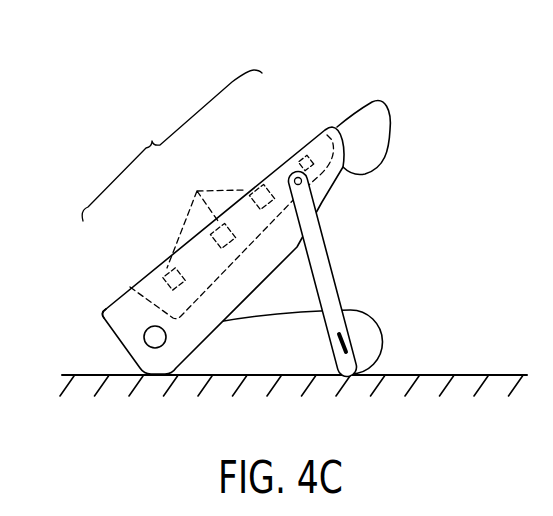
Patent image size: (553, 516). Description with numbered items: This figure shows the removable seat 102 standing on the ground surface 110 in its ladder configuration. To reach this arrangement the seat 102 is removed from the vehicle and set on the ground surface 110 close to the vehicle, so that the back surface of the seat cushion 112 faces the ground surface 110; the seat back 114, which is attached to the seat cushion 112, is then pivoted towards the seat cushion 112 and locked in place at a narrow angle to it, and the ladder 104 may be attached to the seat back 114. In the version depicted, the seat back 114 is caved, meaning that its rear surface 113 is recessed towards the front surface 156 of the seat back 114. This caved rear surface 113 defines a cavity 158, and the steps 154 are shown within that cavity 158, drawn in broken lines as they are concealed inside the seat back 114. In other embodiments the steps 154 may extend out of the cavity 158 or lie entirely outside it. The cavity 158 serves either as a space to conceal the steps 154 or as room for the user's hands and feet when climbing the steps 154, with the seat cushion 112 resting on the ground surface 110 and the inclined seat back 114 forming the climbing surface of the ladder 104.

The seat 102 is at (236, 192).
The ladder 104 is at (172, 145).
The ground surface 110 is at (480, 375).
The seat cushion 112 is at (246, 366).
The rear surface 113 is at (257, 189).
The seat back 114 is at (144, 327).
The steps 154 is at (197, 190).
The front surface 156 is at (265, 263).
The cavity 158 is at (93, 315).